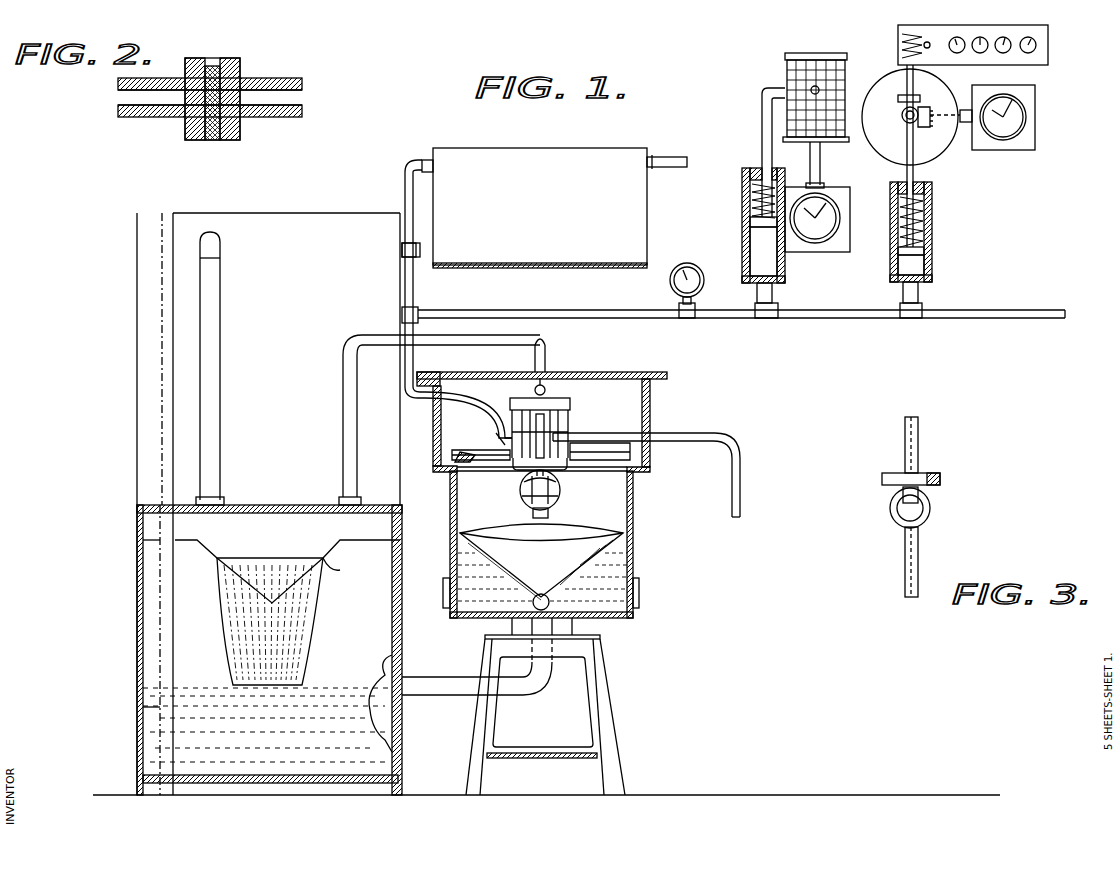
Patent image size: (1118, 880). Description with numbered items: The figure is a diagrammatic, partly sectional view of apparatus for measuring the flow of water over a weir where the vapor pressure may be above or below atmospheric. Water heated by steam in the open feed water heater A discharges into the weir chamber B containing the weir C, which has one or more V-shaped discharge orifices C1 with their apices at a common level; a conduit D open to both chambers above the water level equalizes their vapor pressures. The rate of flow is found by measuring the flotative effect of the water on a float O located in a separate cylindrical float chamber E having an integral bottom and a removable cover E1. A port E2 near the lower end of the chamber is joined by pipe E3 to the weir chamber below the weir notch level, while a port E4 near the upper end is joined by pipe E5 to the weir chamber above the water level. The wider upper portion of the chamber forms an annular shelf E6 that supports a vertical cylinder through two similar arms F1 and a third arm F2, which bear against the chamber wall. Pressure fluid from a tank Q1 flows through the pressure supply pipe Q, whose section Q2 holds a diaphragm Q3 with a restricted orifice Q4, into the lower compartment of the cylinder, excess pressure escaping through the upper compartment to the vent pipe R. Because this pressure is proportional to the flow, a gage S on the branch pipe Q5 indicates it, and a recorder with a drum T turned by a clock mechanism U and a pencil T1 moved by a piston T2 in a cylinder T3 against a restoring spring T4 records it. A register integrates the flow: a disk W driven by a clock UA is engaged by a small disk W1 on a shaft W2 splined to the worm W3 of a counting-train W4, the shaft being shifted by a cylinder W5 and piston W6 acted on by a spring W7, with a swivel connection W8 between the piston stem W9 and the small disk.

In FIG. 1, the water heater A is at (546, 504).
In FIG. 1, the weir chamber B is at (286, 505).
In FIG. 1, the weir C is at (346, 540).
In FIG. 1, the V-shaped discharge orifice C1 is at (326, 559).
In FIG. 1, the conduit D is at (220, 360).
In FIG. 1, the float chamber E is at (633, 536).
In FIG. 1, the removable cover E1 is at (622, 372).
In FIG. 1, the port E2 is at (585, 618).
In FIG. 1, the pipe E3 is at (456, 677).
In FIG. 1, the port E4 is at (548, 385).
In FIG. 1, the pipe E5 is at (439, 420).
In FIG. 1, the annular shelf E6 is at (450, 482).
In FIG. 1, the arm F1 is at (510, 437).
In FIG. 1, the third arm F2 is at (570, 428).
In FIG. 1, the float O is at (541, 567).
In FIG. 1, the vent pipe R is at (740, 499).
In FIG. 1, the pressure supply pipe Q is at (414, 288).
In FIG. 1, the tank Q1 is at (554, 208).
In FIG. 2, the pipe section Q2 is at (232, 60).
In FIG. 1, the pipe section Q2 is at (403, 250).
In FIG. 2, the diaphragm Q3 is at (213, 140).
In FIG. 2, the orifice Q4 is at (222, 105).
In FIG. 1, the branch pipe Q5 is at (720, 319).
In FIG. 1, the pressure gage S is at (696, 289).
In FIG. 1, the drum T is at (785, 60).
In FIG. 1, the pencil T1 is at (762, 90).
In FIG. 1, the piston T2 is at (745, 240).
In FIG. 1, the cylinder T3 is at (780, 268).
In FIG. 1, the restoring spring T4 is at (745, 192).
In FIG. 1, the clock mechanism U is at (838, 252).
In FIG. 1, the clock UA is at (1035, 95).
In FIG. 1, the disk W is at (878, 145).
In FIG. 1, the small disk W1 is at (904, 108).
In FIG. 3, the small disk W1 is at (941, 480).
In FIG. 1, the shaft W2 is at (915, 78).
In FIG. 3, the shaft W2 is at (920, 445).
In FIG. 1, the worm W3 is at (902, 42).
In FIG. 1, the counting-train W4 is at (1048, 46).
In FIG. 1, the cylinder W5 is at (932, 230).
In FIG. 1, the piston W6 is at (932, 260).
In FIG. 1, the spring W7 is at (893, 202).
In FIG. 3, the swivel connection W8 is at (931, 512).
In FIG. 3, the stem W9 is at (920, 557).